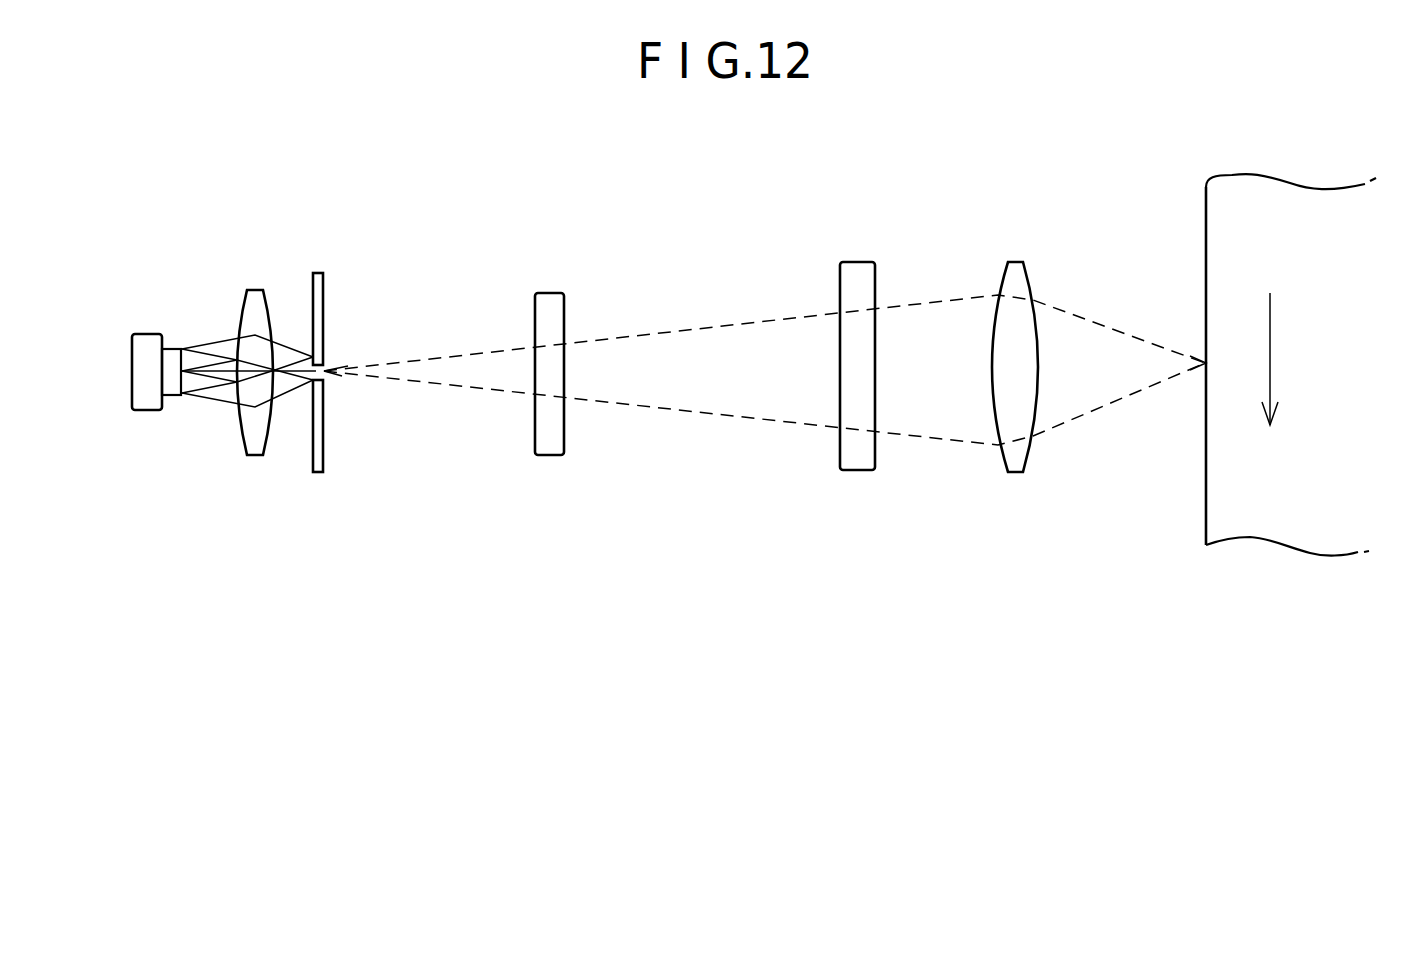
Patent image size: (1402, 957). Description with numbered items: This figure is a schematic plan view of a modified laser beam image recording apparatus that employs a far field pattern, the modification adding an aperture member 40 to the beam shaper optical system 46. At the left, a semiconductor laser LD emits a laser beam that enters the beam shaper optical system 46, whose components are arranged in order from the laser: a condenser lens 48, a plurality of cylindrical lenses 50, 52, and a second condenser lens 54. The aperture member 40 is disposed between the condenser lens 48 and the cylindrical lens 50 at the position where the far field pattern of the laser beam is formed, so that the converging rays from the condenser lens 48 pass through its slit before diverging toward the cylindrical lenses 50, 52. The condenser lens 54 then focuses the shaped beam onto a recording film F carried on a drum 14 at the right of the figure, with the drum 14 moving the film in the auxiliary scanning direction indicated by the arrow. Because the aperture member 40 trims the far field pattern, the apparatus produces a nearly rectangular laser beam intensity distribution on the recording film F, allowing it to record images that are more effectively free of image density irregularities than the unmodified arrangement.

The drum 14 is at (1252, 401).
The aperture member 40 is at (322, 285).
The beam shaper optical system 46 is at (770, 227).
The condenser lens 48 is at (257, 292).
The cylindrical lens 50 is at (548, 293).
The cylindrical lens 52 is at (863, 262).
The condenser lens 54 is at (1015, 262).
The semiconductor laser LD is at (150, 337).
The recording film F is at (1207, 223).